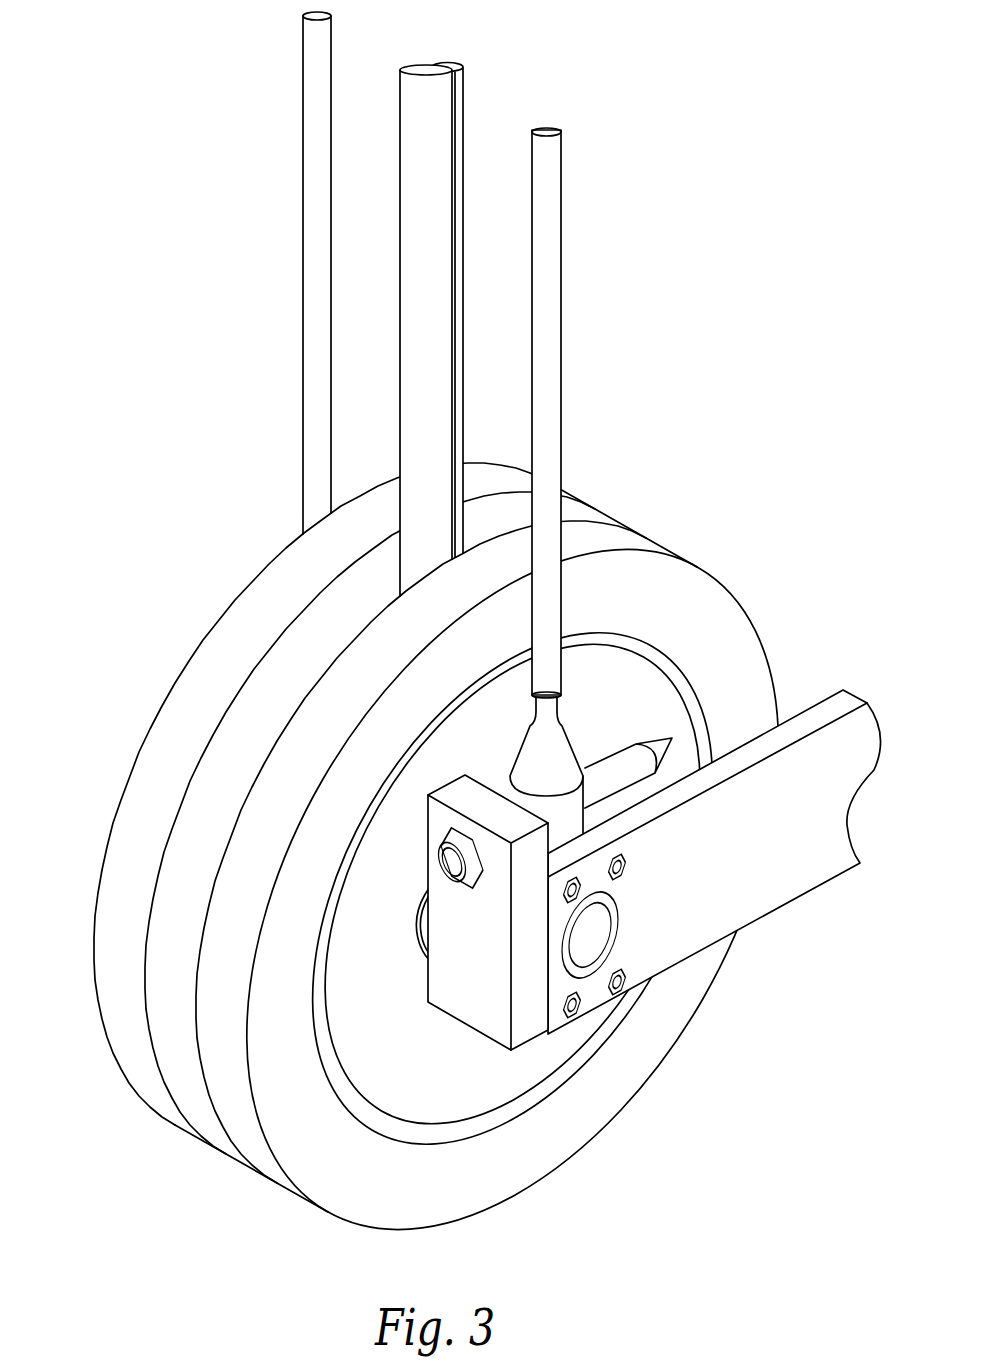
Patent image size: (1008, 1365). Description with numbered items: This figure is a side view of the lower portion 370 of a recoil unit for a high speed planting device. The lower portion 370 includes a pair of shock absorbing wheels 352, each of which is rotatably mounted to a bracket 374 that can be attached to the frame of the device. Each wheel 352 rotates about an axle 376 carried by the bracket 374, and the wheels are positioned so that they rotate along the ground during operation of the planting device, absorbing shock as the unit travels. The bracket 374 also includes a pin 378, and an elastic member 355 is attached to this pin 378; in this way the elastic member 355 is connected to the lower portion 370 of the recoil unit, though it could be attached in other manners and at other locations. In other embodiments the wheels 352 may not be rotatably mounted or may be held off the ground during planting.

The lower portion 370 is at (477, 666).
The shock absorbing wheels 352 is at (192, 662).
The elastic member 355 is at (561, 363).
The bracket 374 is at (714, 862).
The axle 376 is at (612, 943).
The pin 378 is at (633, 742).